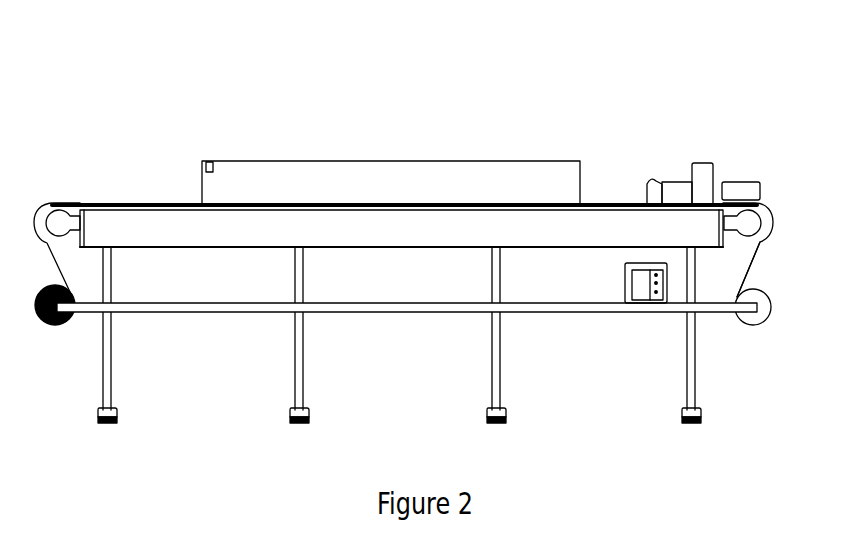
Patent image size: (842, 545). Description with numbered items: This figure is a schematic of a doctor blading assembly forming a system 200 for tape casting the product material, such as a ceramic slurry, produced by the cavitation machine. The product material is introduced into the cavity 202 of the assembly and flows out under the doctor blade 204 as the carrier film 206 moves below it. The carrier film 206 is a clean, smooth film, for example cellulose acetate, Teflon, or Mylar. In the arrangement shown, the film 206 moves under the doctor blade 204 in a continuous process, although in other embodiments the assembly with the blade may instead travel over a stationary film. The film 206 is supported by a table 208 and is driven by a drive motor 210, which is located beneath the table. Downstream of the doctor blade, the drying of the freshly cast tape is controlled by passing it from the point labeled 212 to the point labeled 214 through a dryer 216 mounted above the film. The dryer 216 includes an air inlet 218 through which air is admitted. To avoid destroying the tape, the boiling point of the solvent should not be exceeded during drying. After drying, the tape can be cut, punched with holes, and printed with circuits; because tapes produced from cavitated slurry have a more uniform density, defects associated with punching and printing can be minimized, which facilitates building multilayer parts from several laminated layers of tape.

The system 200 is at (459, 73).
The cavity 202 is at (673, 185).
The doctor blade 204 is at (647, 190).
The carrier film 206 is at (754, 263).
The table 208 is at (395, 243).
The drive motor 210 is at (640, 296).
The point 212 is at (630, 196).
The point 214 is at (104, 194).
The dryer 216 is at (394, 161).
The air inlet 218 is at (210, 163).